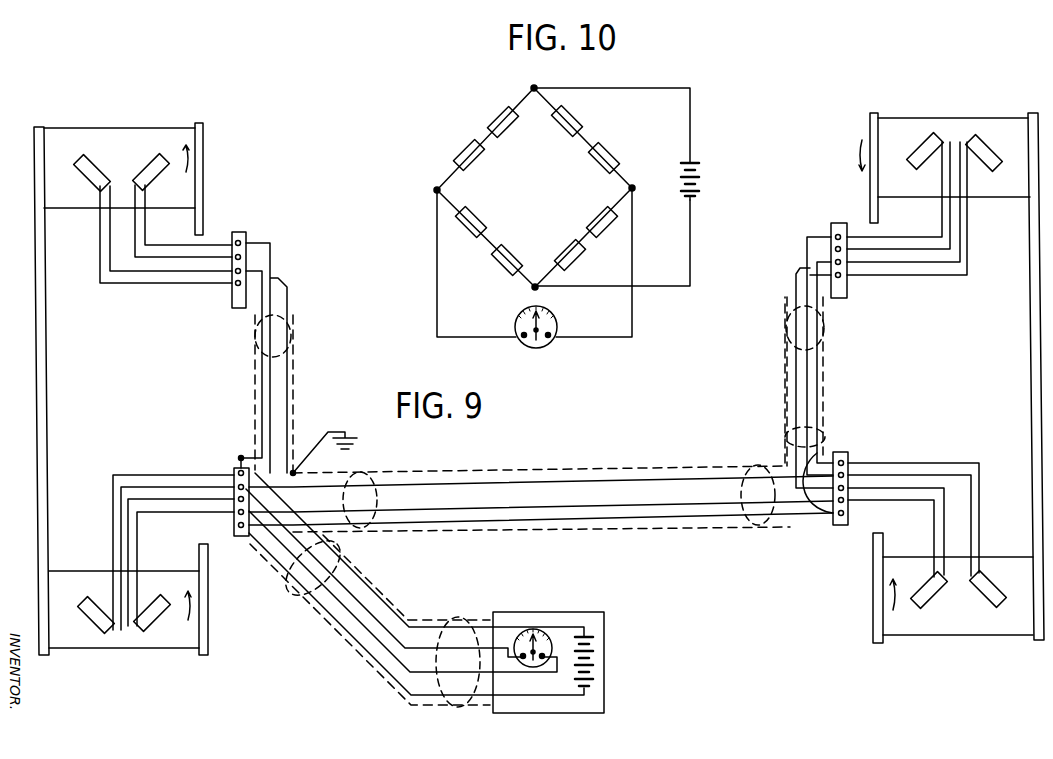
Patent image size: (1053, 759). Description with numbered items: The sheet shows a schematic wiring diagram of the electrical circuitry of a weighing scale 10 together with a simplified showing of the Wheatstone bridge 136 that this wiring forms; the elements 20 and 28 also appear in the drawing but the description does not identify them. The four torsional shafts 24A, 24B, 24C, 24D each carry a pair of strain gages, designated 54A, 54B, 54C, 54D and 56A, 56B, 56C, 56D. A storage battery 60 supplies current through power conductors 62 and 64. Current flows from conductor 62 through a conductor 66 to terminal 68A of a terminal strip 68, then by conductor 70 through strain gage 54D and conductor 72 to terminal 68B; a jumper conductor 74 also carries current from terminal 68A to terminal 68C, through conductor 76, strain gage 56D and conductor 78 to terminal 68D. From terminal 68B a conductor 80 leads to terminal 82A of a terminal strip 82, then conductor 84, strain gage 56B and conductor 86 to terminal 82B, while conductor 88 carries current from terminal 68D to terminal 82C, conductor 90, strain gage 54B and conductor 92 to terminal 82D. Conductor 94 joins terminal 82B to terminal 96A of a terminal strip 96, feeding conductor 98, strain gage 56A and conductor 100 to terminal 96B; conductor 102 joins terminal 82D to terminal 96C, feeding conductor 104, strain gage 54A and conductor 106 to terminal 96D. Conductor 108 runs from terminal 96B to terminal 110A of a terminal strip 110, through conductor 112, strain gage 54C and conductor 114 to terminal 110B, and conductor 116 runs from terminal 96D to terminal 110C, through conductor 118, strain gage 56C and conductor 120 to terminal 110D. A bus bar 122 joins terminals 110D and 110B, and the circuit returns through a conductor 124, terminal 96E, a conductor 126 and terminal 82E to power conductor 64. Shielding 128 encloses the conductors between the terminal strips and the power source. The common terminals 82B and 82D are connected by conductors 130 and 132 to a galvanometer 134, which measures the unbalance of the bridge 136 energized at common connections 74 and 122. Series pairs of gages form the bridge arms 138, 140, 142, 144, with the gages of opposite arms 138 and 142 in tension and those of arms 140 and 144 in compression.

In FIG. 9, the weighing scale 10 is at (34, 320).
In FIG. 9, the right panel 20 is at (1030, 356).
In FIG. 9, the torsional shaft 24A is at (958, 636).
In FIG. 9, the torsional shaft 24B is at (134, 649).
In FIG. 9, the torsional shaft 24C is at (956, 117).
In FIG. 9, the torsional shaft 24D is at (110, 134).
In FIG. 9, the mounting bar 28 is at (203, 162).
In FIG. 9, the strain gage 54A is at (990, 604).
In FIG. 10, the strain gage 54A is at (479, 217).
In FIG. 9, the strain gage 54B is at (90, 628).
In FIG. 10, the strain gage 54B is at (480, 161).
In FIG. 9, the strain gage 54C is at (992, 148).
In FIG. 10, the strain gage 54C is at (576, 262).
In FIG. 9, the strain gage 54D is at (85, 160).
In FIG. 10, the strain gage 54D is at (579, 112).
In FIG. 9, the strain gage 56A is at (915, 604).
In FIG. 10, the strain gage 56A is at (595, 216).
In FIG. 9, the strain gage 56B is at (160, 624).
In FIG. 10, the strain gage 56B is at (611, 157).
In FIG. 9, the strain gage 56C is at (915, 150).
In FIG. 10, the strain gage 56C is at (509, 255).
In FIG. 9, the strain gage 56D is at (158, 159).
In FIG. 10, the strain gage 56D is at (510, 130).
In FIG. 9, the storage battery 60 is at (604, 656).
In FIG. 10, the storage battery 60 is at (699, 177).
In FIG. 9, the power conductor 62 is at (482, 626).
In FIG. 10, the power conductor 62 is at (620, 88).
In FIG. 9, the power conductor 64 is at (482, 697).
In FIG. 10, the power conductor 64 is at (660, 286).
In FIG. 9, the conductor 66 is at (258, 312).
In FIG. 9, the terminal strip 68 is at (246, 236).
In FIG. 9, the terminal 68A is at (242, 271).
In FIG. 9, the terminal 68B is at (238, 288).
In FIG. 9, the terminal 68C is at (242, 257).
In FIG. 9, the terminal 68D is at (238, 240).
In FIG. 9, the conductor 70 is at (110, 244).
In FIG. 9, the conductor 72 is at (100, 268).
In FIG. 9, the jumper conductor 74 is at (238, 272).
In FIG. 10, the jumper conductor 74 is at (536, 86).
In FIG. 9, the conductor 76 is at (135, 238).
In FIG. 9, the conductor 78 is at (145, 230).
In FIG. 9, the conductor 80 is at (290, 297).
In FIG. 9, the terminal strip 82 is at (243, 538).
In FIG. 9, the terminal 82A is at (238, 498).
In FIG. 9, the terminal 82B is at (238, 512).
In FIG. 10, the terminal 82B is at (636, 190).
In FIG. 9, the terminal 82C is at (241, 470).
In FIG. 9, the terminal 82D is at (238, 486).
In FIG. 10, the terminal 82D is at (434, 188).
In FIG. 9, the terminal 82E is at (238, 527).
In FIG. 9, the conductor 84 is at (128, 522).
In FIG. 9, the conductor 86 is at (137, 554).
In FIG. 9, the conductor 88 is at (274, 270).
In FIG. 9, the conductor 90 is at (124, 475).
In FIG. 9, the conductor 92 is at (121, 494).
In FIG. 9, the conductor 94 is at (494, 483).
In FIG. 9, the terminal strip 96 is at (842, 526).
In FIG. 9, the terminal 96A is at (845, 502).
In FIG. 9, the terminal 96B is at (845, 488).
In FIG. 9, the terminal 96C is at (845, 475).
In FIG. 9, the terminal 96D is at (841, 460).
In FIG. 9, the terminal 96E is at (838, 516).
In FIG. 9, the conductor 98 is at (925, 502).
In FIG. 9, the conductor 100 is at (944, 526).
In FIG. 9, the conductor 102 is at (437, 476).
In FIG. 9, the conductor 104 is at (960, 475).
In FIG. 9, the conductor 106 is at (980, 470).
In FIG. 9, the conductor 108 is at (795, 352).
In FIG. 9, the terminal strip 110 is at (841, 299).
In FIG. 9, the terminal 110A is at (842, 276).
In FIG. 9, the terminal 110B is at (842, 263).
In FIG. 9, the terminal 110C is at (838, 234).
In FIG. 9, the terminal 110D is at (835, 249).
In FIG. 9, the conductor 112 is at (968, 260).
In FIG. 9, the conductor 114 is at (961, 212).
In FIG. 9, the conductor 116 is at (795, 376).
In FIG. 9, the conductor 118 is at (921, 235).
In FIG. 9, the conductor 120 is at (950, 186).
In FIG. 9, the jumper conductor or bus bar 122 is at (807, 240).
In FIG. 10, the jumper conductor or bus bar 122 is at (532, 288).
In FIG. 9, the conductor 124 is at (818, 381).
In FIG. 9, the conductor 126 is at (495, 519).
In FIG. 9, the shielding 128 is at (300, 352).
In FIG. 9, the conductor 130 is at (322, 613).
In FIG. 10, the conductor 130 is at (610, 338).
In FIG. 9, the conductor 132 is at (345, 645).
In FIG. 10, the conductor 132 is at (437, 250).
In FIG. 9, the galvanometer 134 is at (540, 630).
In FIG. 10, the galvanometer 134 is at (548, 340).
In FIG. 10, the Wheatstone bridge 136 is at (443, 154).
In FIG. 10, the arm of the bridge 138 is at (598, 134).
In FIG. 10, the arm of the bridge 140 is at (590, 247).
In FIG. 10, the arm of the bridge 142 is at (488, 238).
In FIG. 10, the arm of the bridge 144 is at (481, 120).